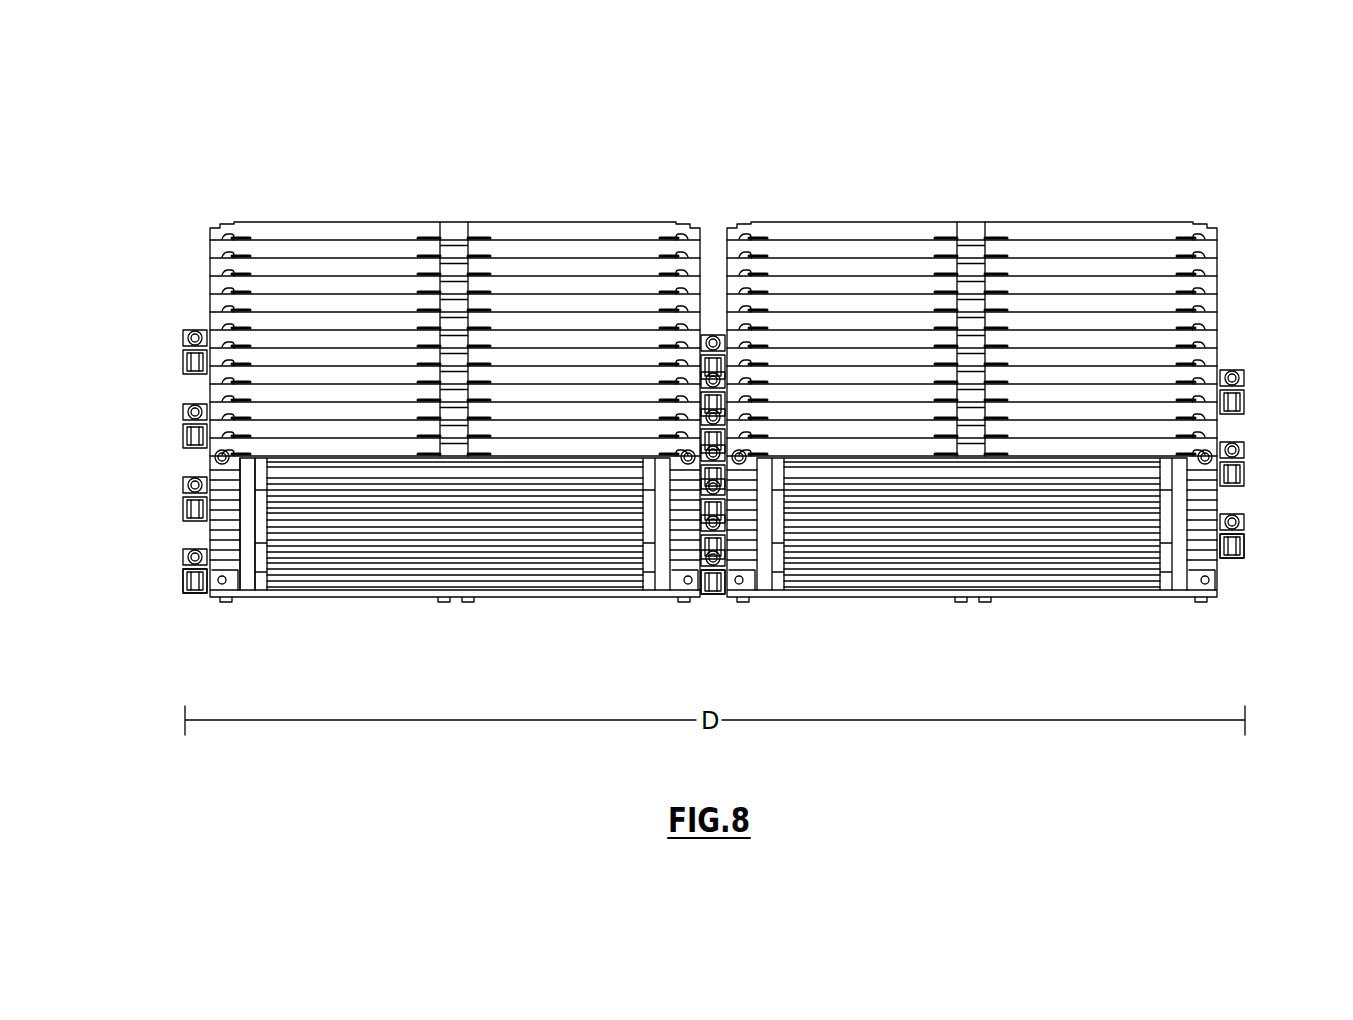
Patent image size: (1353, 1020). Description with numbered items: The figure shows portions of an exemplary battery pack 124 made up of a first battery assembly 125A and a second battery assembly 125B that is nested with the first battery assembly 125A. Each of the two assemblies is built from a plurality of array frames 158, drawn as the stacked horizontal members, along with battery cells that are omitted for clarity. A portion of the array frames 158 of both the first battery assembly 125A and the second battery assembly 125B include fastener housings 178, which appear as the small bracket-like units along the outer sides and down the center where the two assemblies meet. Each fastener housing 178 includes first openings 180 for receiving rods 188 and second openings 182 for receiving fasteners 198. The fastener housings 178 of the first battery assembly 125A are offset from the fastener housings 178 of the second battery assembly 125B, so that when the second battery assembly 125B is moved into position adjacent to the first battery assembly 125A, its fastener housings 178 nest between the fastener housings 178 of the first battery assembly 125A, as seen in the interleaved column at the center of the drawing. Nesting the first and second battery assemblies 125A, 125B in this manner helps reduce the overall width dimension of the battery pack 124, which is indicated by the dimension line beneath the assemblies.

The battery pack 124 is at (724, 130).
The first battery assembly 125A is at (421, 200).
The second battery assembly 125B is at (909, 200).
The array frames 158 is at (260, 305).
The fastener housings 178 is at (160, 520).
The first openings 180 is at (222, 588).
The second openings 182 is at (188, 582).
The rods 188 is at (248, 578).
The fasteners 198 is at (190, 330).